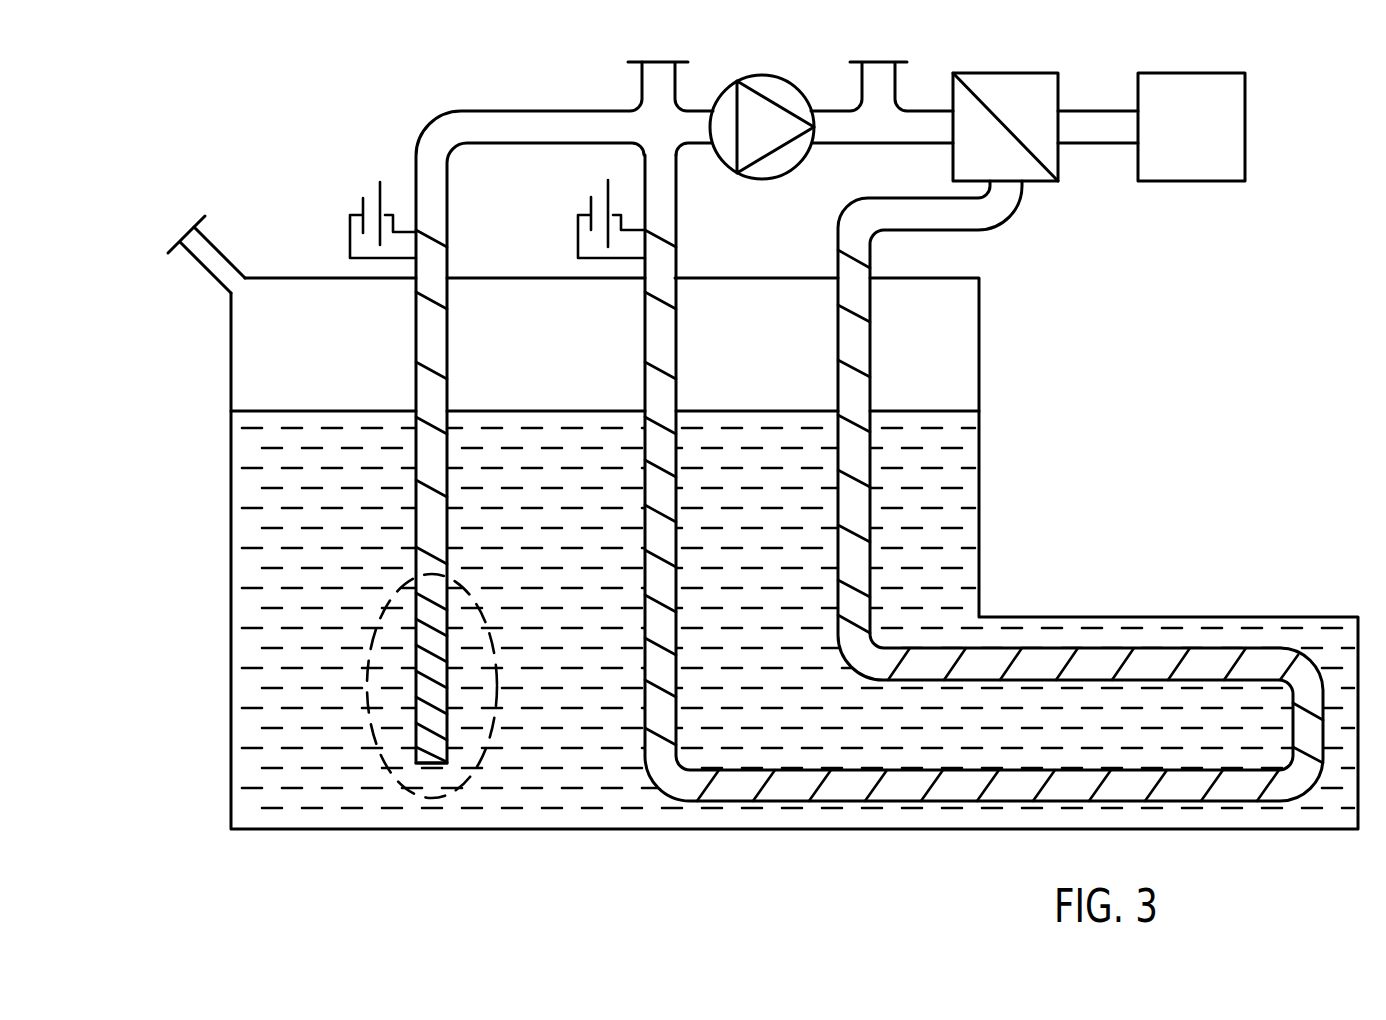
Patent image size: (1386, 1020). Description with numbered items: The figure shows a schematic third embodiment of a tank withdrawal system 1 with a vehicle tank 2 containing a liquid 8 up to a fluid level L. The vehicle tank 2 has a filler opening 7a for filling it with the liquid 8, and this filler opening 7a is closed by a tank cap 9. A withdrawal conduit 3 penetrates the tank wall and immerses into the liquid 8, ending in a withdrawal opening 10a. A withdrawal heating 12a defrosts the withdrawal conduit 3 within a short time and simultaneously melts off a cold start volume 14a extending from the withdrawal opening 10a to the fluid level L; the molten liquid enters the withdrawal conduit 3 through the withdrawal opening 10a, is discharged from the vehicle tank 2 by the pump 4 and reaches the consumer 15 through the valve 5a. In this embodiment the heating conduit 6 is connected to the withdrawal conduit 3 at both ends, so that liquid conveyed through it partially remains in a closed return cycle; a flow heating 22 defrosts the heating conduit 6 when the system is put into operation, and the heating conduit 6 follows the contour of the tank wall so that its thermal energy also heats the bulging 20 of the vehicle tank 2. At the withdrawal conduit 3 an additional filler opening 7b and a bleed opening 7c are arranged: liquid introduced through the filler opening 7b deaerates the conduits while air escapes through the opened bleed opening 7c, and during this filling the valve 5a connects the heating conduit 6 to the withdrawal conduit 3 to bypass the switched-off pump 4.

The tank withdrawal system 1 is at (342, 142).
The vehicle tank 2 is at (231, 352).
The withdrawal conduit 3 is at (416, 352).
The pump 4 is at (733, 83).
The valve 5a is at (962, 73).
The heating conduit 6 is at (980, 212).
The filler opening 7a is at (220, 252).
The additional filler opening 7b is at (642, 83).
The bleed opening 7c is at (895, 82).
The liquid 8 is at (313, 562).
The tank cap 9 is at (187, 232).
The withdrawal opening 10a is at (432, 767).
The withdrawal heating 12a is at (350, 233).
The cold start volume 14a is at (383, 757).
The consumer 15 is at (1218, 73).
The bulging 20 is at (1330, 617).
The flow heating 22 is at (578, 235).
The fluid level L is at (943, 411).